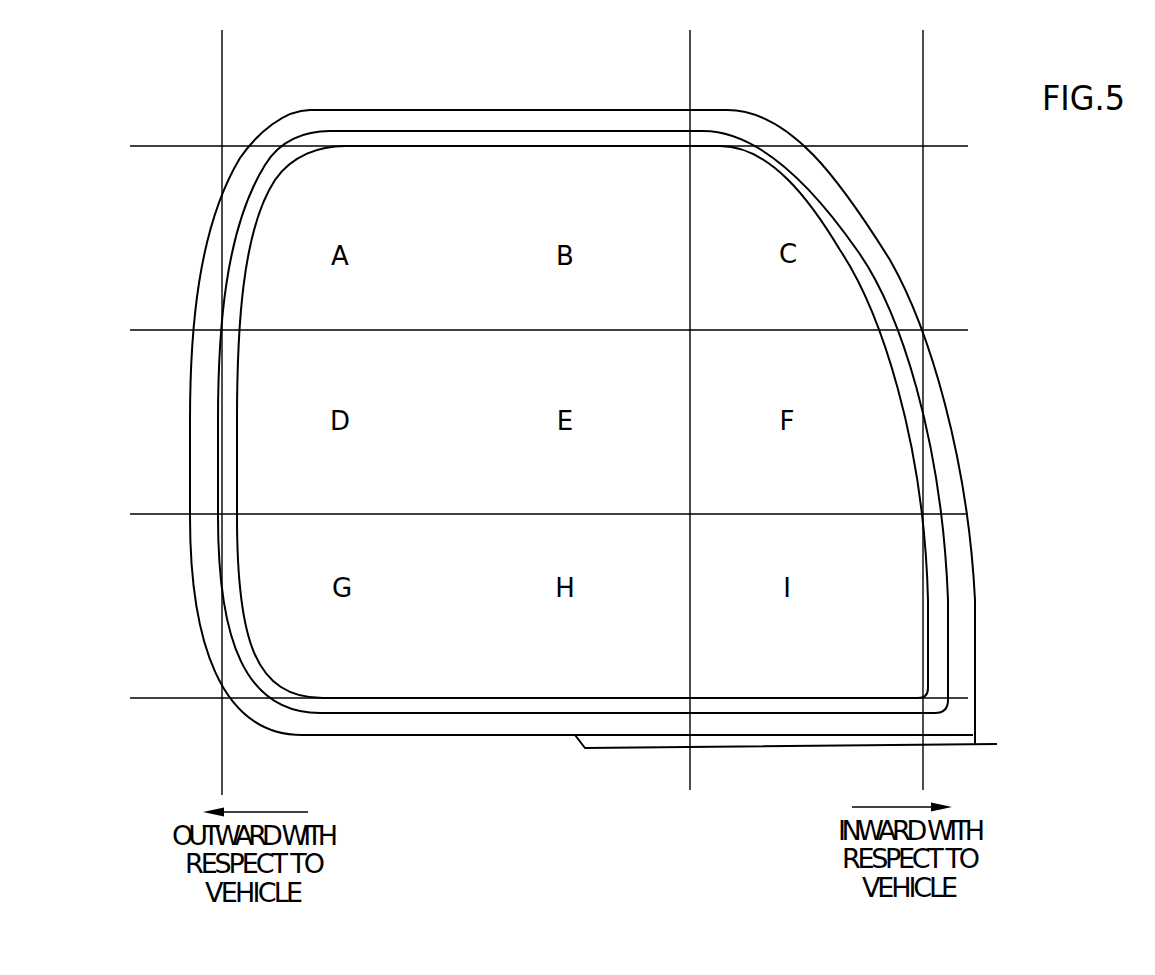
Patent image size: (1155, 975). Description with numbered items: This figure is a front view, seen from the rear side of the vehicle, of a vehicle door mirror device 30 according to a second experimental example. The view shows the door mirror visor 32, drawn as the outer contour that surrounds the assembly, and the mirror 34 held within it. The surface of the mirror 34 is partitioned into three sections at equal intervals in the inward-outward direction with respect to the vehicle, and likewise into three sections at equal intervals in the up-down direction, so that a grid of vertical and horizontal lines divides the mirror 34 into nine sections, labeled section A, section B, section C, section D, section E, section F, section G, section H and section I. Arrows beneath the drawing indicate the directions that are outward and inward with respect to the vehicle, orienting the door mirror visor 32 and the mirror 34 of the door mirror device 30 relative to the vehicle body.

The vehicle door mirror device 30 is at (860, 98).
The door mirror visor 32 is at (300, 118).
The mirror 34 is at (560, 167).